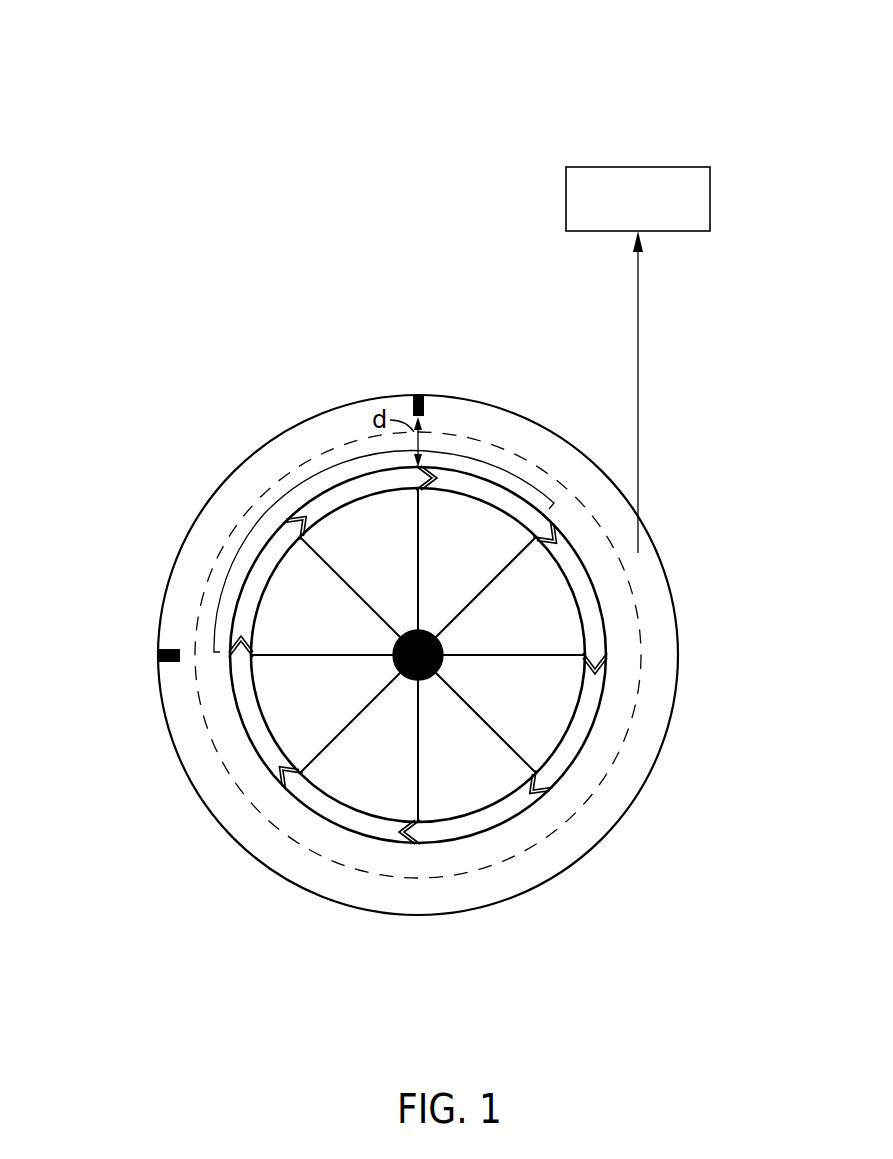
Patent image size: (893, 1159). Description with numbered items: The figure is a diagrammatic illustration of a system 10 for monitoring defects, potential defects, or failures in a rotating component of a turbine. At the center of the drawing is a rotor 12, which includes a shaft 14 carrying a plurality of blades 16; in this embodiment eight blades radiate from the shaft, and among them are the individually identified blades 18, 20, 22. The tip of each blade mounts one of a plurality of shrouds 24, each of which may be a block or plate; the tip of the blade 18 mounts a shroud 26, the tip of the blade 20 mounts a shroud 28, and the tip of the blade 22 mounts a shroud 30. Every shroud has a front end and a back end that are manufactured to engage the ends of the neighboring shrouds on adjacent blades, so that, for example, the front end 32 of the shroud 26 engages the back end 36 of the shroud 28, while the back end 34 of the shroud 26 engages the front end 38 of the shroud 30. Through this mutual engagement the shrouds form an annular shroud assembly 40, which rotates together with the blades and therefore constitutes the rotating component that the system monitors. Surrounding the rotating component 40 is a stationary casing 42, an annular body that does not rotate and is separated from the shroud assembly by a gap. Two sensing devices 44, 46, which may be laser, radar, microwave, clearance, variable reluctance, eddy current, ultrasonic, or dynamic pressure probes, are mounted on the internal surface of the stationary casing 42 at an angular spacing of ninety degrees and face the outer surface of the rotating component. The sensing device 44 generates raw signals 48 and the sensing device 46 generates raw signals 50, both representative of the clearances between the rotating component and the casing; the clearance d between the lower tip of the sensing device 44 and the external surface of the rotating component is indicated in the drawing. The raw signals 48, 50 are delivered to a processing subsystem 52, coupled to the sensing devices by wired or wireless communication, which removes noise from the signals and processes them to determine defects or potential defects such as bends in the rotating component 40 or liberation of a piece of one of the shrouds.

The system 10 is at (127, 70).
The rotor 12 is at (628, 733).
The shaft 14 is at (428, 680).
The blades 16 is at (508, 748).
The blade 18 is at (358, 593).
The blade 20 is at (420, 587).
The blade 22 is at (285, 660).
The shrouds 24 is at (323, 808).
The shroud 26 is at (340, 465).
The shroud 28 is at (517, 475).
The shroud 30 is at (228, 580).
The front end 32 is at (428, 462).
The back end 34 is at (293, 517).
The back end 36 is at (437, 476).
The front end 38 is at (280, 520).
The shroud assembly 40 is at (597, 630).
The stationary casing 42 is at (667, 565).
The sensing device 44 is at (415, 397).
The sensing device 46 is at (163, 663).
The raw signals 48 is at (640, 405).
The raw signals 50 is at (638, 241).
The processing subsystem 52 is at (710, 196).